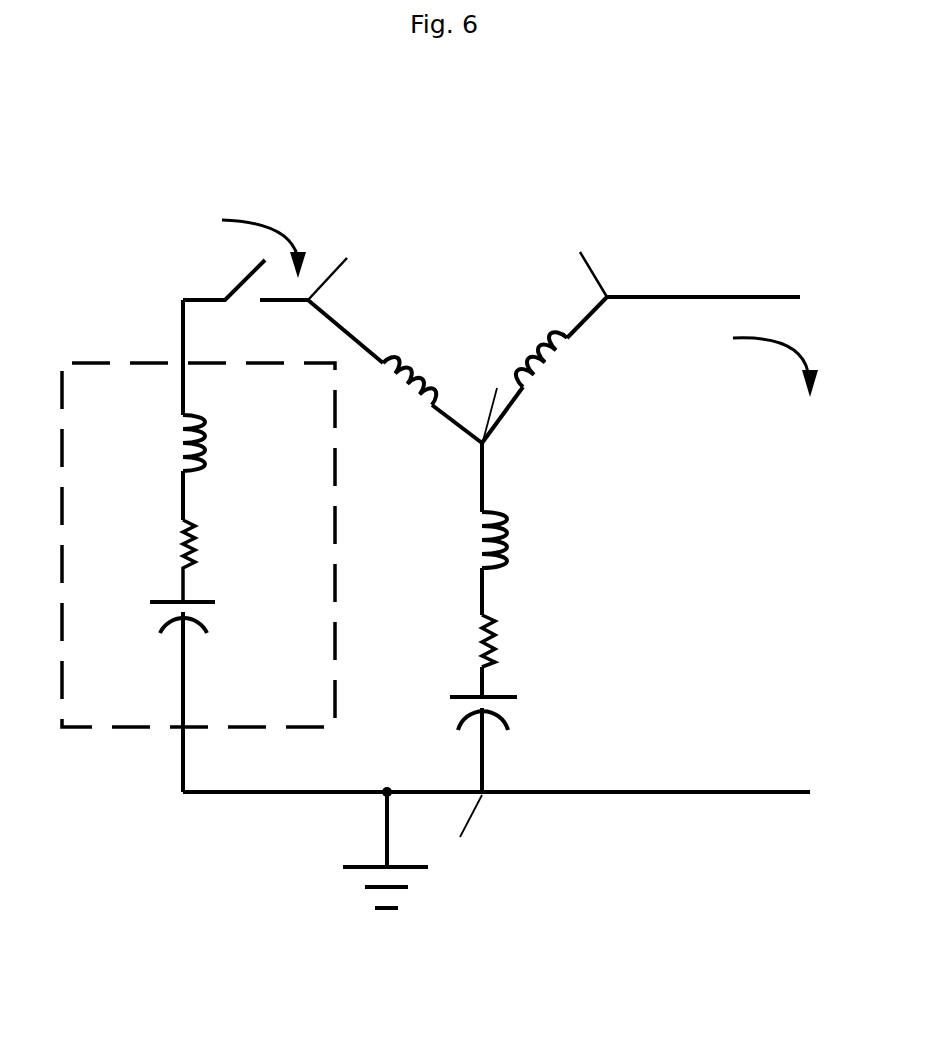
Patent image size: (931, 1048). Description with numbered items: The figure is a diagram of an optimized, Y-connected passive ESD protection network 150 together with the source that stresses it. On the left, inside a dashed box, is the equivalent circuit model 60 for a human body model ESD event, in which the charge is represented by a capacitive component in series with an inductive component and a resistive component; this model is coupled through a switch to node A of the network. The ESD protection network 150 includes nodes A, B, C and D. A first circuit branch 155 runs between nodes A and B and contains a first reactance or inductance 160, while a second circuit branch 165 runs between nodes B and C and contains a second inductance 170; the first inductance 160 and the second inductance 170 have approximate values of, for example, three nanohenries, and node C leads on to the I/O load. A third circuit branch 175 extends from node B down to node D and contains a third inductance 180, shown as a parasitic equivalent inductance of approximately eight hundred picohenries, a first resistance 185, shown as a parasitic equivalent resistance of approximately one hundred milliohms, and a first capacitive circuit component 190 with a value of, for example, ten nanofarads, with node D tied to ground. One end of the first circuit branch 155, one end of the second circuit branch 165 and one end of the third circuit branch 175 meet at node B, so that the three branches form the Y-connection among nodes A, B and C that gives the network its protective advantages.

The ESD protection network 150 is at (581, 179).
The first circuit branch 155 is at (431, 322).
The first inductance 160 is at (402, 387).
The second circuit branch 165 is at (585, 386).
The second inductance 170 is at (575, 345).
The third circuit branch 175 is at (558, 574).
The third inductance 180 is at (473, 540).
The first resistance 185 is at (473, 633).
The first capacitive circuit component 190 is at (457, 712).
The equivalent circuit model 60 is at (145, 730).